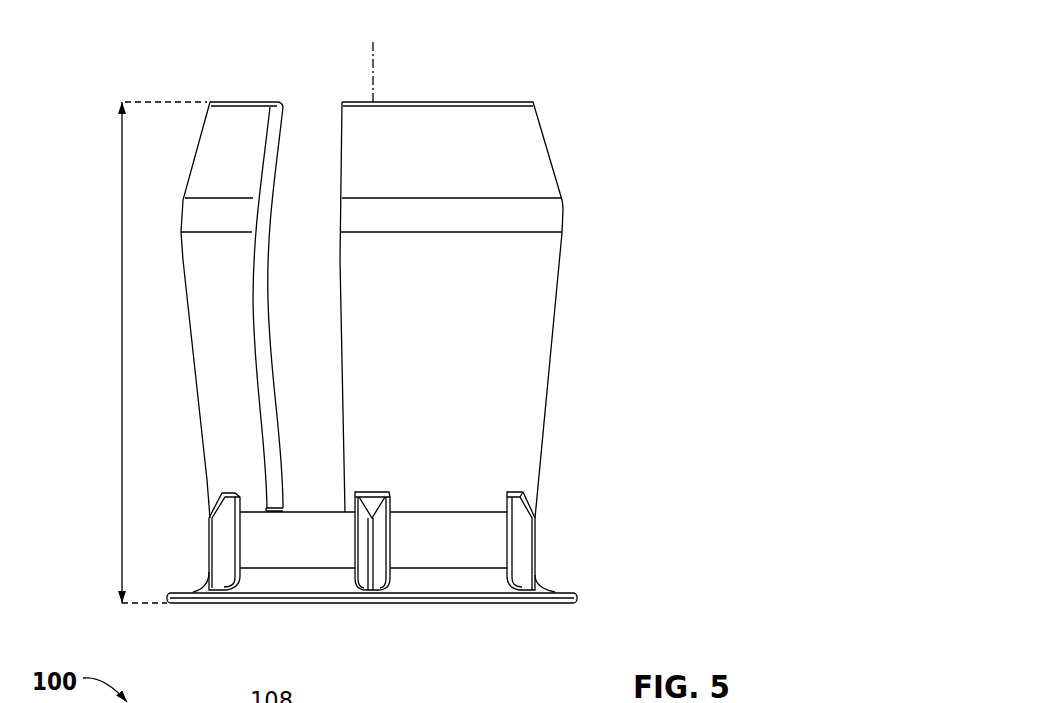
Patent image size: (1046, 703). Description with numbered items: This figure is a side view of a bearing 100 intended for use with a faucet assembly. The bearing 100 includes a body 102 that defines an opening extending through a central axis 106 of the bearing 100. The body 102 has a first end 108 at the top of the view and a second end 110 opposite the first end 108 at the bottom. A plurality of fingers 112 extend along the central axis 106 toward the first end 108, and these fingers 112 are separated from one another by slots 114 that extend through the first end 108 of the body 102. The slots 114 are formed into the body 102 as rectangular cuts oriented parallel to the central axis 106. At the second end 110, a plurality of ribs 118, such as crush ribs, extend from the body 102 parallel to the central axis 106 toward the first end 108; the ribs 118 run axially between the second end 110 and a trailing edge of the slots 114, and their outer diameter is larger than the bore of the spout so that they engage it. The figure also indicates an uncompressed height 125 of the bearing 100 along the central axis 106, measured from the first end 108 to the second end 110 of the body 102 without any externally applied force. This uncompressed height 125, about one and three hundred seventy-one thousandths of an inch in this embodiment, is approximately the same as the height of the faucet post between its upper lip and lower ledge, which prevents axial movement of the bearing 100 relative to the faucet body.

The bearing 100 is at (182, 58).
The body 102 is at (570, 332).
The central axis 106 is at (377, 88).
The first end 108 is at (341, 94).
The second end 110 is at (491, 616).
The fingers 112 is at (537, 273).
The slots 114 is at (312, 167).
The ribs 118 is at (523, 555).
The uncompressed height 125 is at (120, 352).